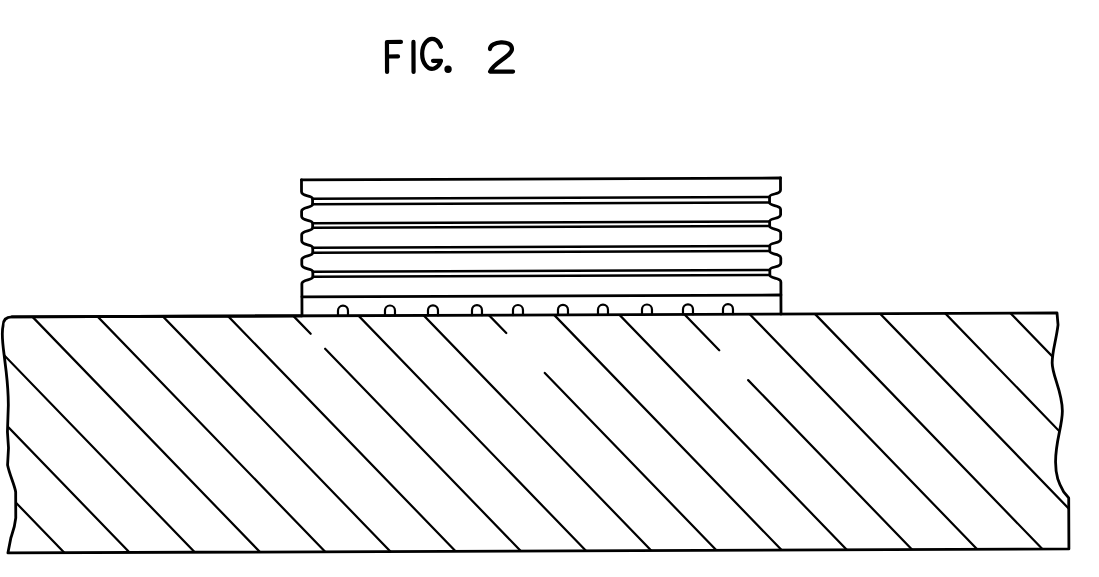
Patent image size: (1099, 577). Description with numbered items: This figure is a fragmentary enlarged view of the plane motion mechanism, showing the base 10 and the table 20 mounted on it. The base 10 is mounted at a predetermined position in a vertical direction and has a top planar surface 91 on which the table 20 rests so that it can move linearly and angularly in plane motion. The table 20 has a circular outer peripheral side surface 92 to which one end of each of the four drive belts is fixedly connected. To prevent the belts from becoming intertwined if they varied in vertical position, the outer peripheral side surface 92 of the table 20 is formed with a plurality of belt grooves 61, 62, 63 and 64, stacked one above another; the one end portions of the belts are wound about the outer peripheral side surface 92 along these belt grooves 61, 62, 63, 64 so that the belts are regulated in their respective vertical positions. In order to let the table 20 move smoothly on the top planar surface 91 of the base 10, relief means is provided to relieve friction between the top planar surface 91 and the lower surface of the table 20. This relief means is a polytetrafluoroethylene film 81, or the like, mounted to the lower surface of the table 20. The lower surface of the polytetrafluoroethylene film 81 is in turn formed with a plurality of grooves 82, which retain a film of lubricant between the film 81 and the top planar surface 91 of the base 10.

The base 10 is at (958, 317).
The table 20 is at (488, 250).
The belt groove 61 is at (304, 201).
The belt groove 62 is at (304, 228).
The belt groove 63 is at (304, 253).
The belt groove 64 is at (304, 276).
The polytetrafluoroethylene film 81 is at (321, 311).
The grooves 82 is at (518, 321).
The top planar surface 91 is at (92, 328).
The outer peripheral side surface 92 is at (745, 190).